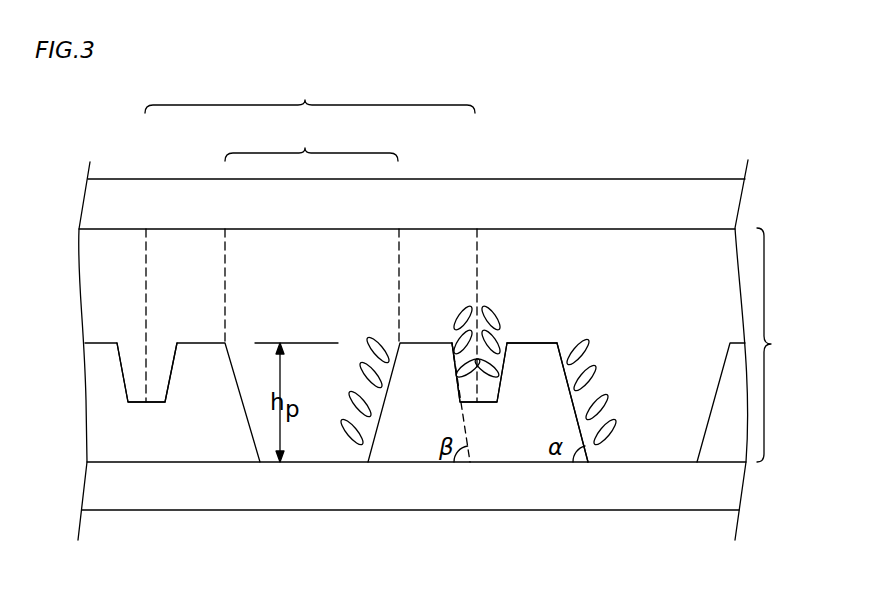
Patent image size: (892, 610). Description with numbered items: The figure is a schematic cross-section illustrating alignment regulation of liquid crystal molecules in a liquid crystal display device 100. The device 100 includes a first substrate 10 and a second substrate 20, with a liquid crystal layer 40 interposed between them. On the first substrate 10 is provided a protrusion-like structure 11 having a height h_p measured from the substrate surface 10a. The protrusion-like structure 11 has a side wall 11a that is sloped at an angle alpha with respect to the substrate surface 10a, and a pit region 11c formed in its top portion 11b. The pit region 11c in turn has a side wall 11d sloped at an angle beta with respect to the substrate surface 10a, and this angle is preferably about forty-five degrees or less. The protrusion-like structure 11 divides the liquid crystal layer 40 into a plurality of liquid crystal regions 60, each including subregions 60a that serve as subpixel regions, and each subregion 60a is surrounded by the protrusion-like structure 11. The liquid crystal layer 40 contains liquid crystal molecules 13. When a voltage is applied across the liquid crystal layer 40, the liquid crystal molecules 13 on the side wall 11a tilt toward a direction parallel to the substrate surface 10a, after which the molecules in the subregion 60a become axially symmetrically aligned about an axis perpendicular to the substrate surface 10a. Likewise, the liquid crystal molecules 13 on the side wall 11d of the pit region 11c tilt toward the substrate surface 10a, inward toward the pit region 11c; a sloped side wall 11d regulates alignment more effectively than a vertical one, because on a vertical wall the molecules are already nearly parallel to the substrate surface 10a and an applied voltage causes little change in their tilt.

The liquid crystal display device 100 is at (667, 91).
The second substrate 20 is at (668, 208).
The liquid crystal layer 40 is at (787, 345).
The liquid crystal region 60 is at (310, 91).
The subregion 60a is at (311, 140).
The first substrate 10 is at (633, 502).
The substrate surface 10a is at (306, 462).
The protrusion-like structure 11 is at (217, 445).
The side wall 11a is at (575, 398).
The top portion 11b is at (537, 343).
The pit region 11c is at (135, 355).
The side wall of pit region 11d is at (457, 350).
The liquid crystal molecules 13 is at (588, 349).